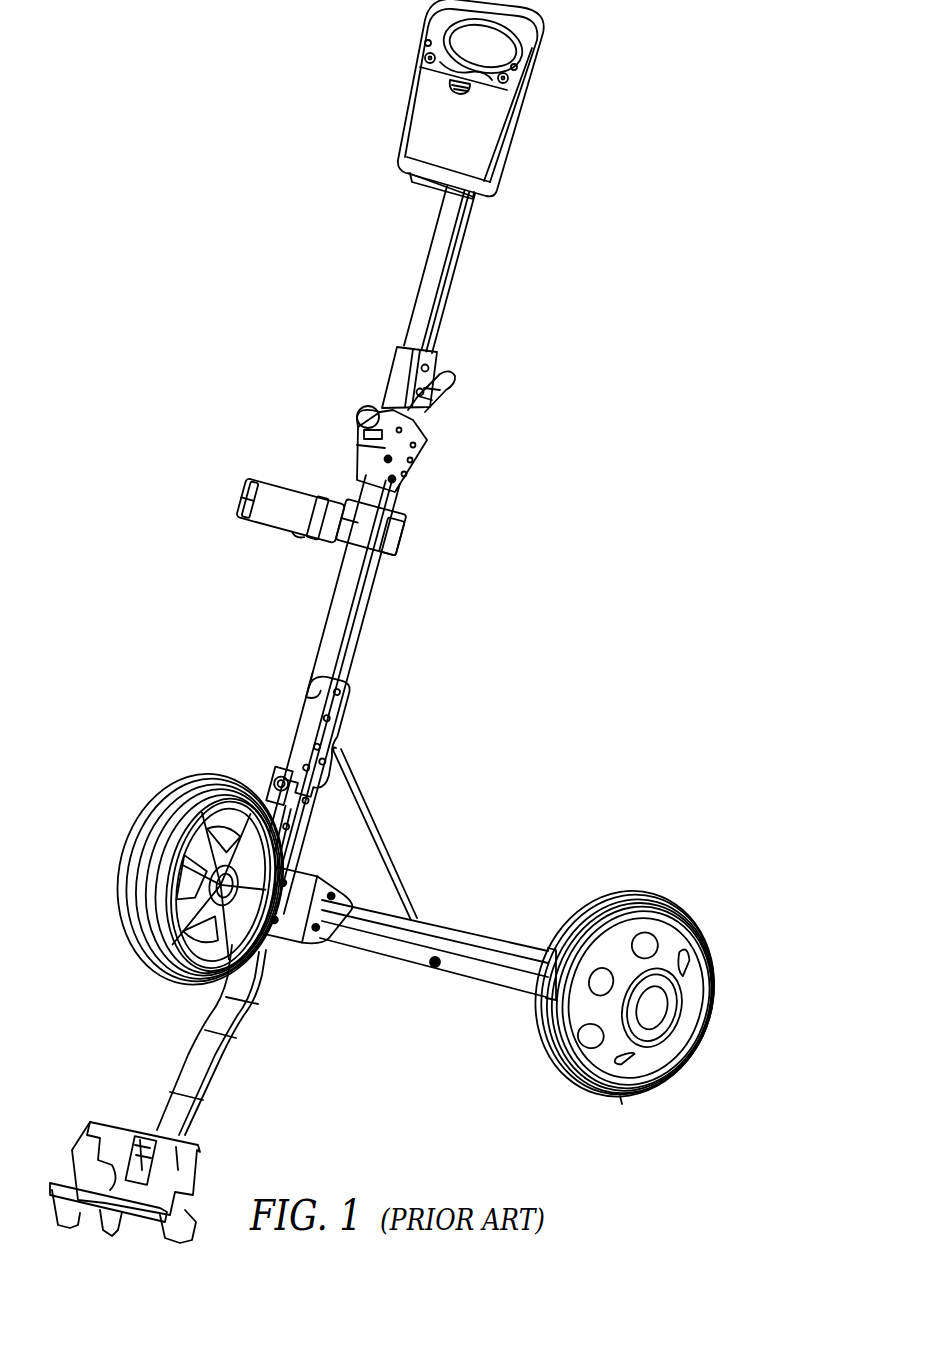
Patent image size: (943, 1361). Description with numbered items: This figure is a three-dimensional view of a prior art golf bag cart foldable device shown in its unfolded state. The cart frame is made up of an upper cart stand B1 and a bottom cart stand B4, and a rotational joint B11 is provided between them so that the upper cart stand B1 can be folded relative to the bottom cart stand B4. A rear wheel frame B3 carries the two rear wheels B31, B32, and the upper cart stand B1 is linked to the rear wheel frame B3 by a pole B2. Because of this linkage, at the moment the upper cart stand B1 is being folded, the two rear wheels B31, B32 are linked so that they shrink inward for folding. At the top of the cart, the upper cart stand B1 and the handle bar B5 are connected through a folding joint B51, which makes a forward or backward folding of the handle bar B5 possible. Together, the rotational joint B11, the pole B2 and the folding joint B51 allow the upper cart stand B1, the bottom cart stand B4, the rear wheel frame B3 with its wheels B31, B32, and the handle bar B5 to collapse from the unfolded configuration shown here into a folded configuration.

The upper cart stand B1 is at (343, 670).
The rotational joint B11 is at (330, 762).
The pole B2 is at (390, 855).
The rear wheel frame B3 is at (463, 968).
The rear wheel B31 is at (620, 1090).
The rear wheel B32 is at (150, 968).
The bottom cart stand B4 is at (207, 1078).
The handle bar B5 is at (430, 286).
The folding joint B51 is at (426, 440).